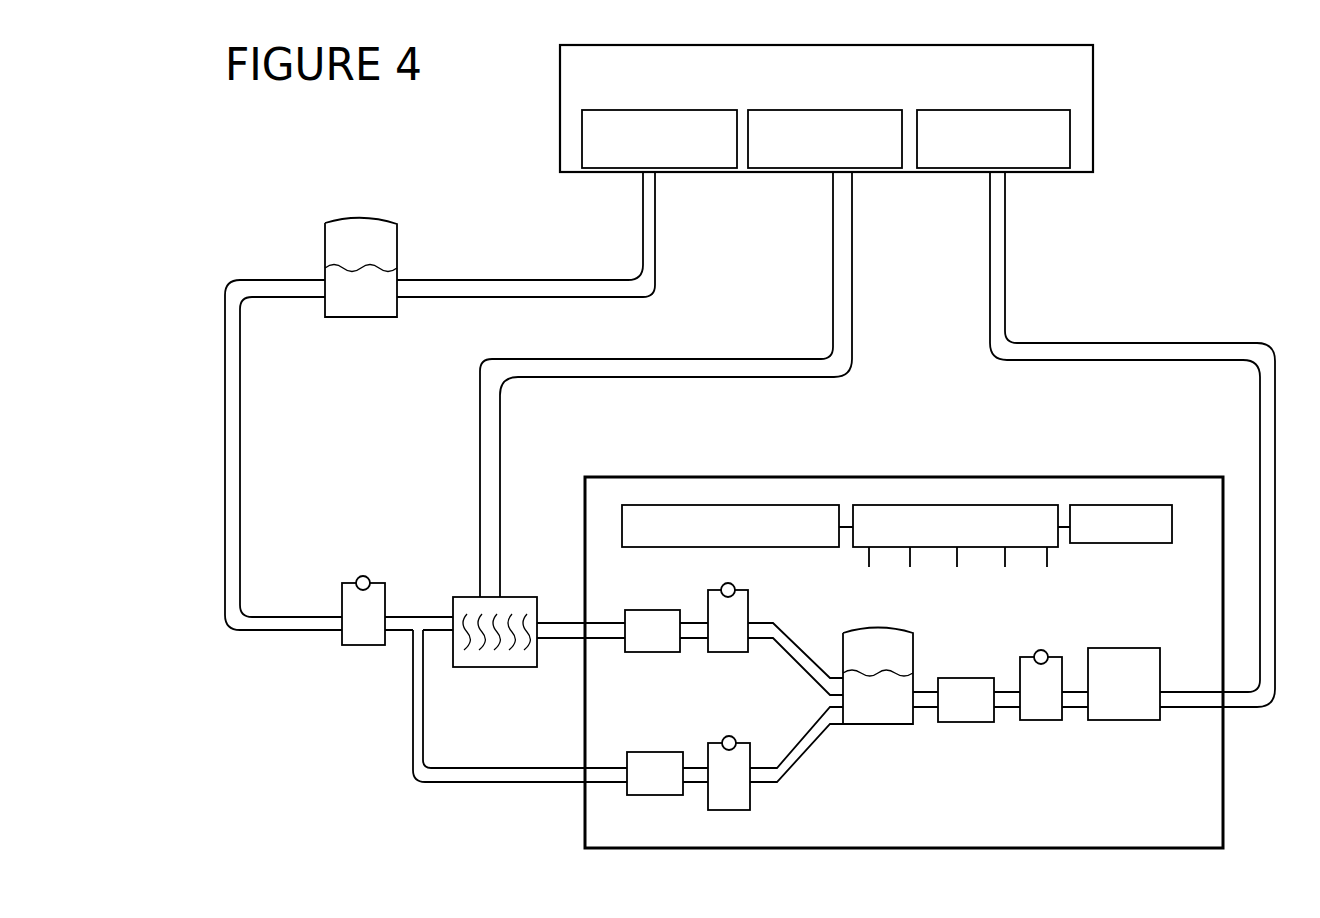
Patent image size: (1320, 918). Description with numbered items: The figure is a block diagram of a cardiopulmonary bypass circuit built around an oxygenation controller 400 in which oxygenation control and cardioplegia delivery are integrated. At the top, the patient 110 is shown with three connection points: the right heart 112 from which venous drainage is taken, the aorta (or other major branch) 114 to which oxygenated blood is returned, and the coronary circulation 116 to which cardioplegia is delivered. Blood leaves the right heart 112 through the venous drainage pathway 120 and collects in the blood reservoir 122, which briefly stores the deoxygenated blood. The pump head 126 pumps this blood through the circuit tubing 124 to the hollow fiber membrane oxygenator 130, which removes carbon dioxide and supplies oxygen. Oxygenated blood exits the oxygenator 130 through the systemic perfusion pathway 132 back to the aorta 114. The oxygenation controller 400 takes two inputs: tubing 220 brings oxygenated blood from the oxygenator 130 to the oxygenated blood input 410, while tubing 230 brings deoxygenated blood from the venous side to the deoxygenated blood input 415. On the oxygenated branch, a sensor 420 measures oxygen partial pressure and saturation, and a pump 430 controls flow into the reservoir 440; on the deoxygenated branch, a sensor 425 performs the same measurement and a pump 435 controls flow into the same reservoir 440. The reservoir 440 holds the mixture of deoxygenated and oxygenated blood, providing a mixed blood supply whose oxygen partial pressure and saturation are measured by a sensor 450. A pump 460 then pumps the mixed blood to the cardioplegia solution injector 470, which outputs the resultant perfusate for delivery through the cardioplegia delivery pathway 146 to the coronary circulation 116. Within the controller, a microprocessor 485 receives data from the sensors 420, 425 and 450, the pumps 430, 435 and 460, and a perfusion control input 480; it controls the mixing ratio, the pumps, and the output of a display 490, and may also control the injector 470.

The patient 110 is at (558, 92).
The right heart 112 is at (680, 110).
The aorta (or other major branch) 114 is at (816, 110).
The coronary circulation 116 is at (998, 110).
The venous drainage pathway 120 is at (527, 278).
The blood reservoir 122 is at (325, 240).
The circuit tubing 124 is at (225, 405).
The pump head 126 is at (355, 650).
The hollow fiber membrane oxygenator 130 is at (490, 668).
The systemic perfusion pathway 132 is at (721, 357).
The cardioplegia delivery pathway 146 is at (1005, 247).
The tubing 220 is at (565, 622).
The tubing 230 is at (536, 783).
The oxygenation controller 400 is at (893, 850).
The oxygenated blood input 410 is at (601, 640).
The deoxygenated (venous) blood input 415 is at (600, 783).
The sensor 420 is at (658, 653).
The sensor 425 is at (657, 796).
The pump 430 is at (727, 653).
The pump 435 is at (738, 810).
The reservoir 440 is at (875, 725).
The sensor 450 is at (965, 722).
The pump 460 is at (1040, 720).
The cardioplegia solution injector 470 is at (1120, 722).
The perfusion control input 480 is at (718, 505).
The microprocessor 485 is at (930, 505).
The display 490 is at (1095, 505).